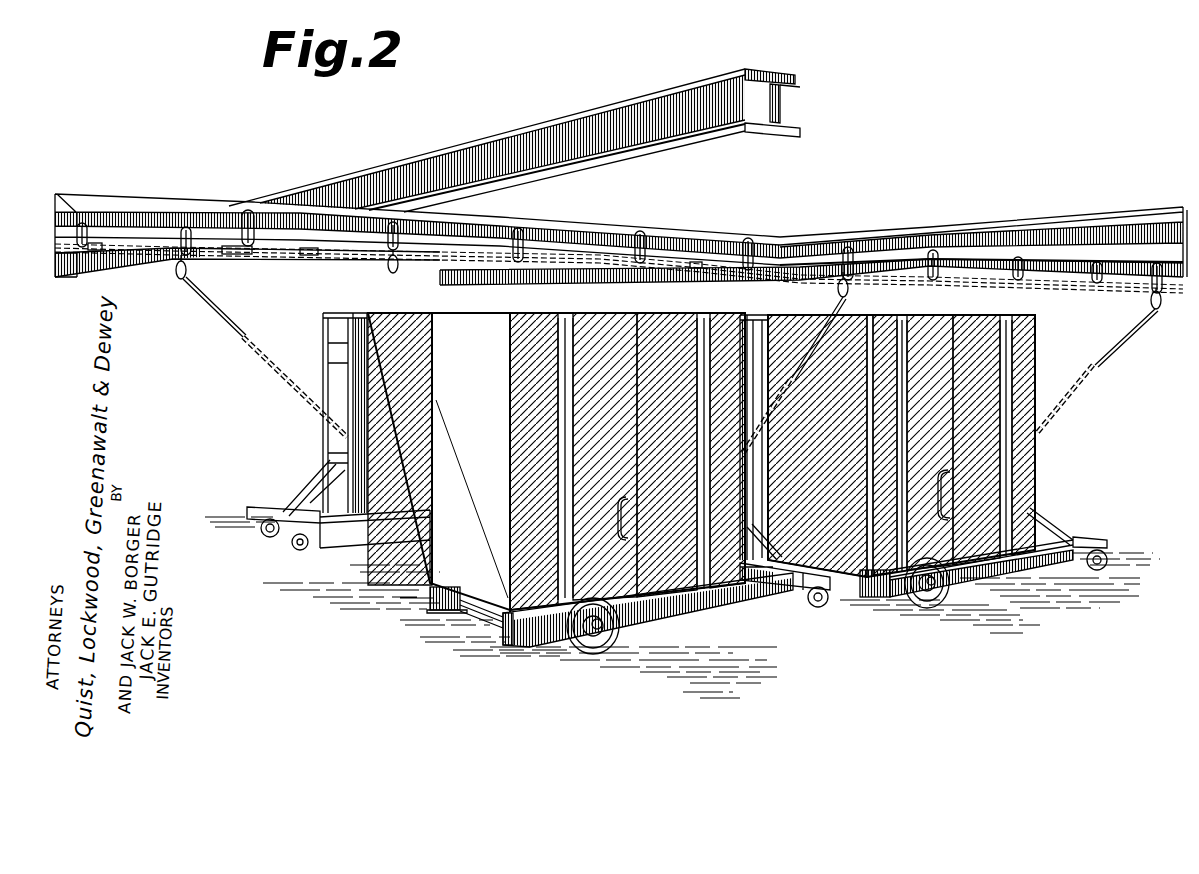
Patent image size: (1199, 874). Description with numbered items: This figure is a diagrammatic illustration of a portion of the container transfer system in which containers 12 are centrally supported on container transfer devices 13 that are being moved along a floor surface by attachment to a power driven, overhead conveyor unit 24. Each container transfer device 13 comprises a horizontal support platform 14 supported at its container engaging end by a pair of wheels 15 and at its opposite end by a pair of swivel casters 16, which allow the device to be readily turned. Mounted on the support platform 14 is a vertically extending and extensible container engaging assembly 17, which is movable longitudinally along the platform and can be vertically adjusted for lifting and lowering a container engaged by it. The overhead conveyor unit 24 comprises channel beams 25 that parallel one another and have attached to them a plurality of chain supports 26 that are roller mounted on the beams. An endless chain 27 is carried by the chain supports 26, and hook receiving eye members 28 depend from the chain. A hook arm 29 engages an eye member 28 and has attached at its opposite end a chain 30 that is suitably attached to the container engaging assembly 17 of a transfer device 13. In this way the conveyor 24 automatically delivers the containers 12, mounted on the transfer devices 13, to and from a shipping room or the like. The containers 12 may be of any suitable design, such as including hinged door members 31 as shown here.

The container 12 is at (408, 315).
The container transfer device 13 is at (281, 431).
The horizontal support platform 14 is at (349, 555).
The wheels 15 is at (575, 650).
The swivel casters 16 is at (296, 548).
The container engaging assembly 17 is at (306, 477).
The overhead conveyor unit 24 is at (827, 226).
The channel beams 25 is at (136, 250).
The chain supports 26 is at (92, 225).
The endless chain 27 is at (95, 252).
The hook receiving eye members 28 is at (190, 270).
The hook arm 29 is at (205, 300).
The chain 30 is at (268, 372).
The hinged door members 31 is at (652, 318).